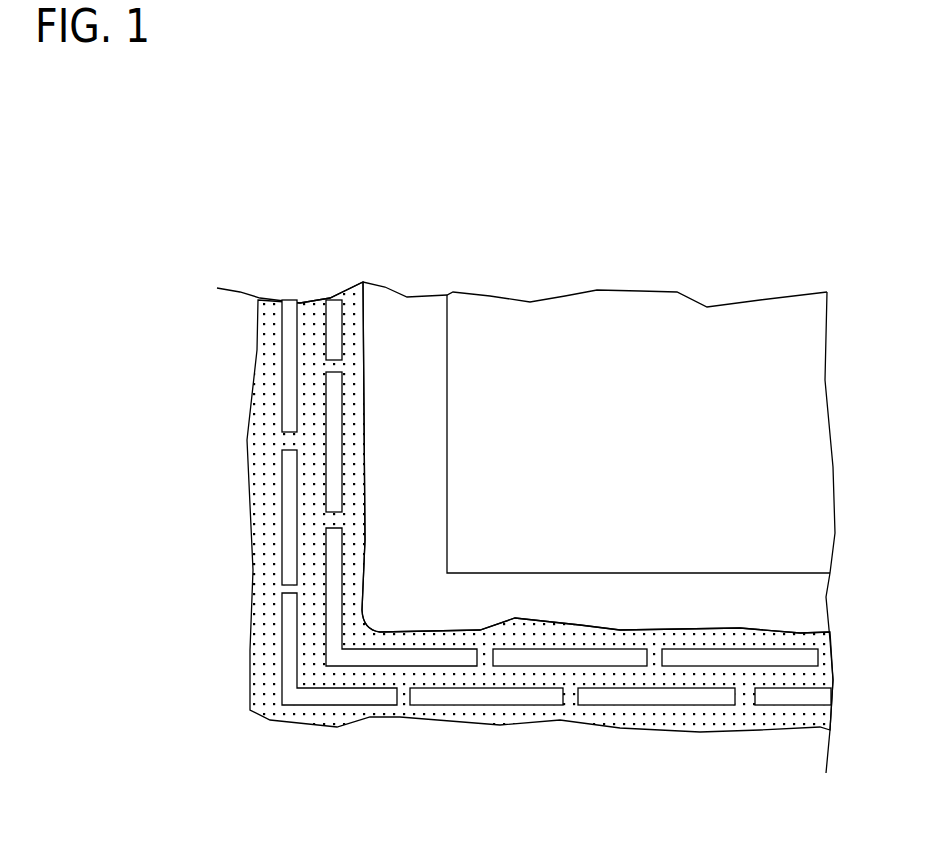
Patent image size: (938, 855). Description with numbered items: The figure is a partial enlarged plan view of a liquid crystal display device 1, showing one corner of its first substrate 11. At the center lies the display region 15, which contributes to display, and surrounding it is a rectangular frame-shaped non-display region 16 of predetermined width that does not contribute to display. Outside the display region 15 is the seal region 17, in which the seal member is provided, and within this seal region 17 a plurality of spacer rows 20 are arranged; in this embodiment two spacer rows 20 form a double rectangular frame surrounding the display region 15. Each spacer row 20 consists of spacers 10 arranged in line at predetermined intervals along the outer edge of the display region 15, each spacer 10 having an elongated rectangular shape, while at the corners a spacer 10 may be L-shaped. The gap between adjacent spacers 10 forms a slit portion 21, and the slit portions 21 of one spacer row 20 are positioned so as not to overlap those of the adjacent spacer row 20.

The liquid crystal display device 1 is at (170, 168).
The spacer 10 is at (332, 550).
The first substrate 11 is at (237, 287).
The display region 15 is at (623, 307).
The non-display region 16 is at (403, 307).
The seal region 17 is at (313, 315).
The spacer row 20 is at (323, 415).
The slit portion 21 is at (655, 658).